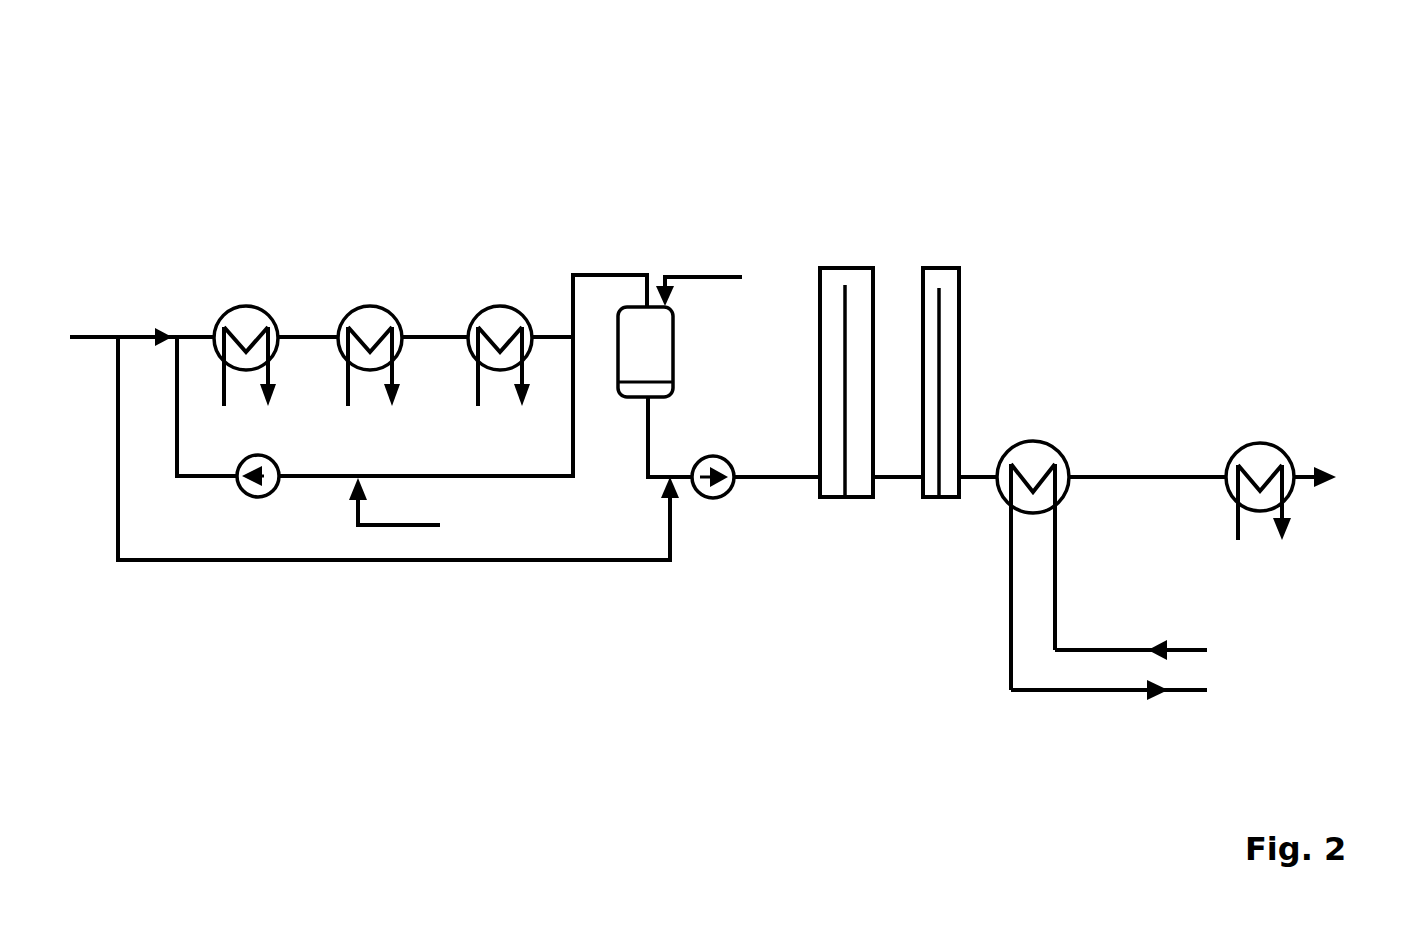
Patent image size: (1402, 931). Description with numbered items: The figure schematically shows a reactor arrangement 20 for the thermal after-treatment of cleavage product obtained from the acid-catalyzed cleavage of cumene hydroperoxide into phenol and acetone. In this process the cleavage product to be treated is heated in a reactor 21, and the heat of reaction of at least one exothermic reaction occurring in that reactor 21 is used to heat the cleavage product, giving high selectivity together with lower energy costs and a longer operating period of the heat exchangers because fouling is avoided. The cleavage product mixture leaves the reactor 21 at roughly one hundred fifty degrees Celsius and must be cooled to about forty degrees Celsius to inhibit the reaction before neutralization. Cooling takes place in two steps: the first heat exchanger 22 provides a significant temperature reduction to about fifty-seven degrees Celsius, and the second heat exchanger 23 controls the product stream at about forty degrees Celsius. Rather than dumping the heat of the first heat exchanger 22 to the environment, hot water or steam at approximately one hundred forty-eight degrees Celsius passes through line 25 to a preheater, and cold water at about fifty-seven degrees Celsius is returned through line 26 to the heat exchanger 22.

The reactor arrangement 20 is at (549, 150).
The reactor 21 is at (830, 318).
The first heat exchanger 22 is at (1024, 441).
The second heat exchanger 23 is at (1258, 443).
The line 25 is at (1087, 695).
The line 26 is at (1188, 647).